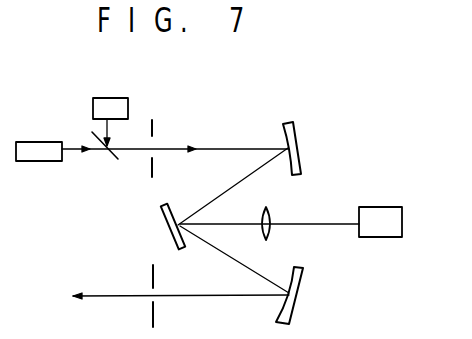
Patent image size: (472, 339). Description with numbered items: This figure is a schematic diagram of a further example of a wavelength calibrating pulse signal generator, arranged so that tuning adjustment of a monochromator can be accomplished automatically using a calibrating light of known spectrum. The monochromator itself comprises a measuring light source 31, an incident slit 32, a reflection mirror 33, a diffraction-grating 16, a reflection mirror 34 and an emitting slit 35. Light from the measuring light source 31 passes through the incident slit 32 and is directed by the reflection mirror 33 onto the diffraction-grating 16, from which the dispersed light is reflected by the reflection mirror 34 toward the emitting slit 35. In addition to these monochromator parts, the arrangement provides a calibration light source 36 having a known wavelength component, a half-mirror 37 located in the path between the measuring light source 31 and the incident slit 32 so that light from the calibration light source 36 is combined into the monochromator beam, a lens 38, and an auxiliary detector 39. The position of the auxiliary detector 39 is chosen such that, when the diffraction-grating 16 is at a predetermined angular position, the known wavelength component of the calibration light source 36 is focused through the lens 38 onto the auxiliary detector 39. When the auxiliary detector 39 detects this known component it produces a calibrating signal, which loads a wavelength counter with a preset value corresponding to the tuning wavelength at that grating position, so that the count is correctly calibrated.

The diffraction-grating 16 is at (161, 225).
The measuring light source 31 is at (50, 142).
The incident slit 32 is at (163, 118).
The reflection mirror 33 is at (305, 114).
The reflection mirror 34 is at (330, 292).
The emitting slit 35 is at (172, 322).
The calibration light source 36 is at (126, 98).
The half-mirror 37 is at (112, 176).
The lens 38 is at (280, 200).
The auxiliary detector 39 is at (404, 197).